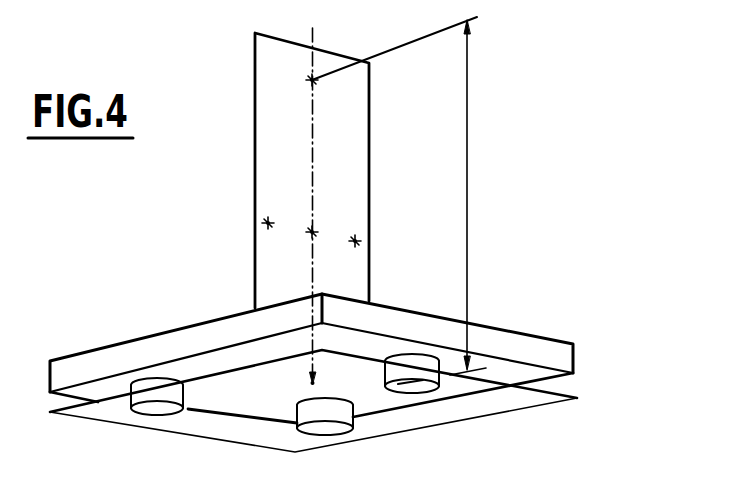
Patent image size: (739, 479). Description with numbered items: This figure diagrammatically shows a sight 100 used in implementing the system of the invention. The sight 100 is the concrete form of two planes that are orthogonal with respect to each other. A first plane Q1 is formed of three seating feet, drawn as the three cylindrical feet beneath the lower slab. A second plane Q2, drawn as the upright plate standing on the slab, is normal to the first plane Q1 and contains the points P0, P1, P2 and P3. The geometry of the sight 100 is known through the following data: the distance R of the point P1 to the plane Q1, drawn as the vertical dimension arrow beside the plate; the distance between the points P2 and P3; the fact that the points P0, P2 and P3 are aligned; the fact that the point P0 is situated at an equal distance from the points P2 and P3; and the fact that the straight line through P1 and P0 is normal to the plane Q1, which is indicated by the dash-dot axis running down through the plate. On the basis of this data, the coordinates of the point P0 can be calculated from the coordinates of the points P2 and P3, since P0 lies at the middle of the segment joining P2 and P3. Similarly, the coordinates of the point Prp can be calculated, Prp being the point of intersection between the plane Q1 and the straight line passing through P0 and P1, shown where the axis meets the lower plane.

The sight 100 is at (247, 263).
The first plane Q1 is at (540, 396).
The second plane Q2 is at (255, 118).
The point P0 is at (324, 220).
The point P1 is at (327, 92).
The point P2 is at (349, 258).
The point P3 is at (275, 243).
The point Prp is at (310, 383).
The distance R is at (401, 196).